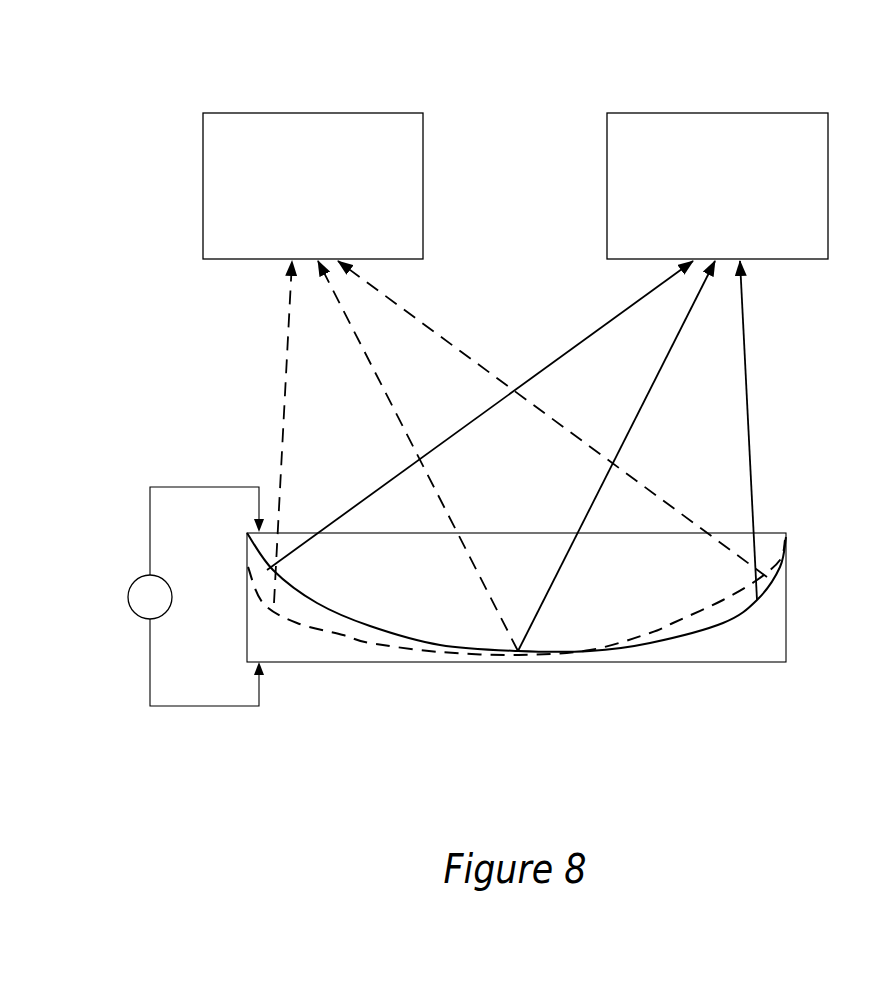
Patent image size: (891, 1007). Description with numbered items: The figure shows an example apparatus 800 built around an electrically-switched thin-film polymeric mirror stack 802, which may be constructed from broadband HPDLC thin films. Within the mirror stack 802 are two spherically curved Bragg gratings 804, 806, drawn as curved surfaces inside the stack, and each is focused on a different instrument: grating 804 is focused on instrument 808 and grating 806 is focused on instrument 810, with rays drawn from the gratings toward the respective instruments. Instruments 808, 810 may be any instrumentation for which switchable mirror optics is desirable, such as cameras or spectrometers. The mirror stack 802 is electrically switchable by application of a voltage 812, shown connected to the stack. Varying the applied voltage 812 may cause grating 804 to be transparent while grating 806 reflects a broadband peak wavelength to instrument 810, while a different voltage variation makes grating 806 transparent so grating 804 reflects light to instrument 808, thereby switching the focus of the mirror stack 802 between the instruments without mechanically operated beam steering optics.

The apparatus 800 is at (138, 31).
The thin-film polymeric mirror stack 802 is at (775, 632).
The spherically curved Bragg grating 804 is at (343, 637).
The spherically curved Bragg grating 806 is at (677, 640).
The instrument 808 is at (375, 251).
The instrument 810 is at (773, 251).
The voltage 812 is at (128, 597).